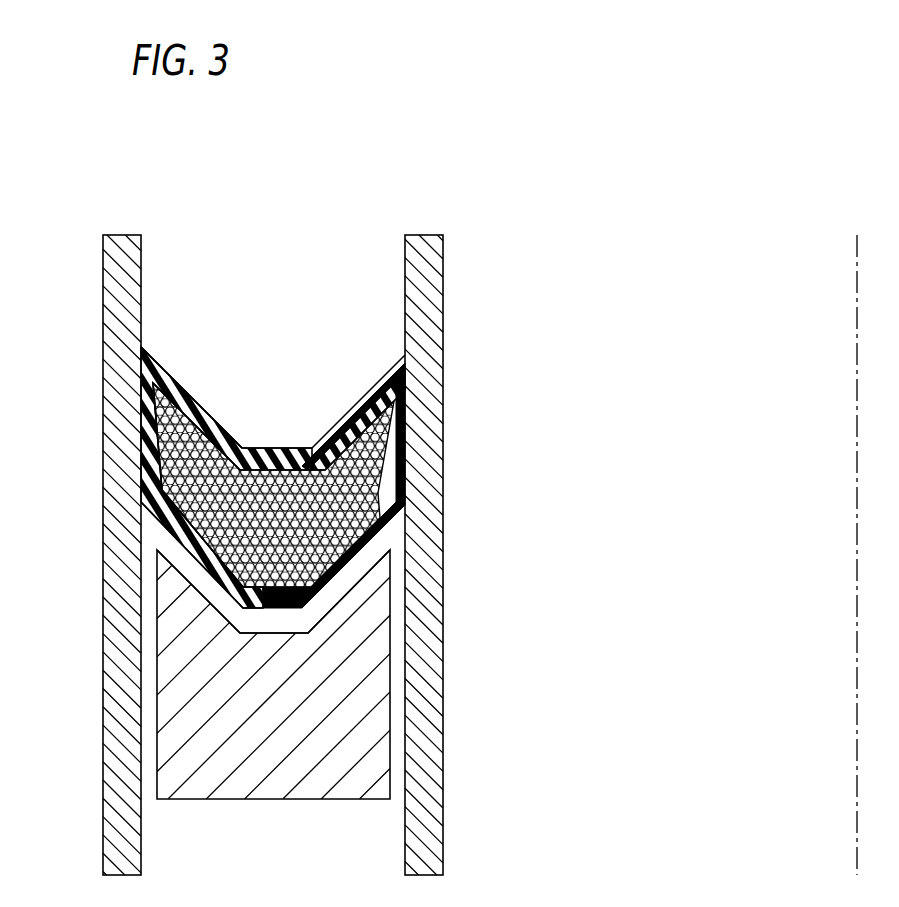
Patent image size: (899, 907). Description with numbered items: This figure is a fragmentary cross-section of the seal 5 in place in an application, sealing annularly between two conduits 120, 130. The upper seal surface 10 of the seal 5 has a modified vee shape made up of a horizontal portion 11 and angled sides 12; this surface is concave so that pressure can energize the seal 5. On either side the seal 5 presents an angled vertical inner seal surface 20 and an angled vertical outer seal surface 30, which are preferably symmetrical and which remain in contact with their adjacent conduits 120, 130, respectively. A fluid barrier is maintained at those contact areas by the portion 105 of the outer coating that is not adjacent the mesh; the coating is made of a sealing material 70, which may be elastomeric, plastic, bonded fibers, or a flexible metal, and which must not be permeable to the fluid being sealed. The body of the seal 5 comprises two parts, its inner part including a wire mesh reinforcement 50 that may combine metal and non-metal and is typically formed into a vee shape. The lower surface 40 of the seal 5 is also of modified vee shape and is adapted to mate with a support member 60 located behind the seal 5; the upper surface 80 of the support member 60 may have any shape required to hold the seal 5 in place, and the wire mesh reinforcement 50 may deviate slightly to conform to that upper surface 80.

The seal 5 is at (365, 482).
The upper seal surface 10 is at (164, 372).
The horizontal portion 11 is at (270, 447).
The angled sides 12 is at (350, 393).
The angled vertical inner seal surface 20 is at (405, 413).
The angled vertical outer seal surface 30 is at (143, 383).
The lower surface 40 is at (245, 628).
The wire mesh reinforcement 50 is at (152, 465).
The support member 60 is at (360, 663).
The sealing material 70 is at (397, 358).
The upper surface of the support member 80 is at (269, 637).
The portion of outer coating 105 is at (143, 363).
The conduit 120 is at (443, 548).
The conduit 130 is at (103, 548).